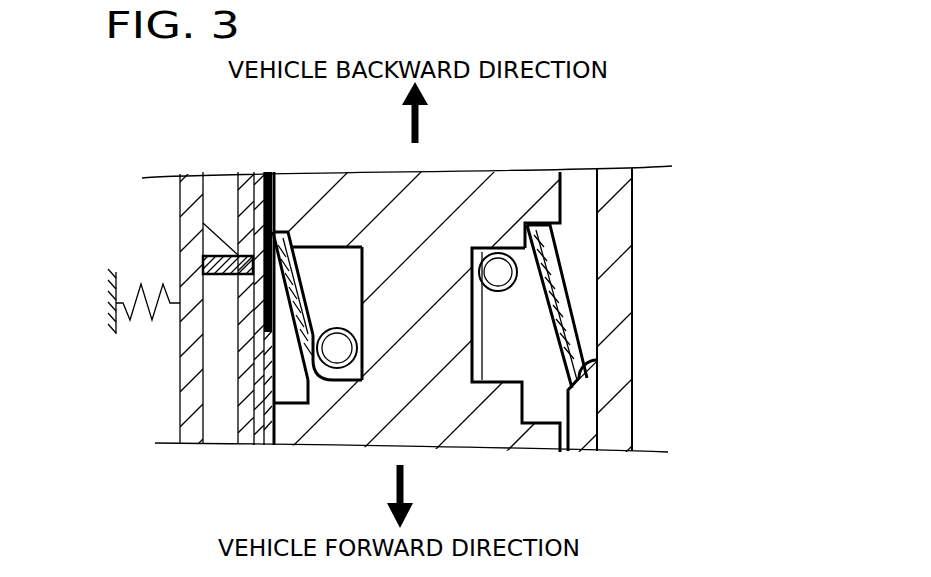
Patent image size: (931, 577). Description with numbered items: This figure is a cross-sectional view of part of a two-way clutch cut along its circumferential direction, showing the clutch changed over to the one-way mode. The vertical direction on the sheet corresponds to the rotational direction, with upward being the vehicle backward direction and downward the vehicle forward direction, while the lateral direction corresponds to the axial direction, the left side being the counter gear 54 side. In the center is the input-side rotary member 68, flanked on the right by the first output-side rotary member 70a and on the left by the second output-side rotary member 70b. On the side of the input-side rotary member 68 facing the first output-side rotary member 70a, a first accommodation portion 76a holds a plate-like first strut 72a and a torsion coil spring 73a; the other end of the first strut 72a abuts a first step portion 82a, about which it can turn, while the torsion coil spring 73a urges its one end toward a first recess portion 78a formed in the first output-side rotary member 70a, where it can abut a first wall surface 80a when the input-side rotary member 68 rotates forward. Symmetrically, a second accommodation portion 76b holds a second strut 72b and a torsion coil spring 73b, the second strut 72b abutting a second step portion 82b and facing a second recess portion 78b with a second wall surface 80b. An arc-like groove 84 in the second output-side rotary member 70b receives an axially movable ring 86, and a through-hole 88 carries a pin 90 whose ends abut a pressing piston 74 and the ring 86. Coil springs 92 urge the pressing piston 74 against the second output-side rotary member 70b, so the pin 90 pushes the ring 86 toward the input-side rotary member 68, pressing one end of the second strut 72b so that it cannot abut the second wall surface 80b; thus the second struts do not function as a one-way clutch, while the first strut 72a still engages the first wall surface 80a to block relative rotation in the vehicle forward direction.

The counter gear 54 is at (101, 310).
The input-side rotary member 68 is at (449, 461).
The first output-side rotary member 70a is at (617, 161).
The second output-side rotary member 70b is at (220, 163).
The first strut 72a is at (553, 298).
The second strut 72b is at (289, 303).
The torsion coil spring 73a is at (497, 253).
The torsion coil spring 73b is at (337, 368).
The pressing piston 74 is at (190, 233).
The first accommodation portion 76a is at (510, 370).
The second accommodation portion 76b is at (338, 307).
The first recess portion 78a is at (580, 236).
The second recess portion 78b is at (300, 250).
The first wall surface 80a is at (583, 363).
The second wall surface 80b is at (280, 227).
The first step portion 82a is at (542, 201).
The second step portion 82b is at (295, 422).
The arc-like groove 84 is at (240, 200).
The ring 86 is at (258, 412).
The through-hole 88 is at (203, 268).
The pin 90 is at (212, 278).
The coil spring 92 is at (141, 327).